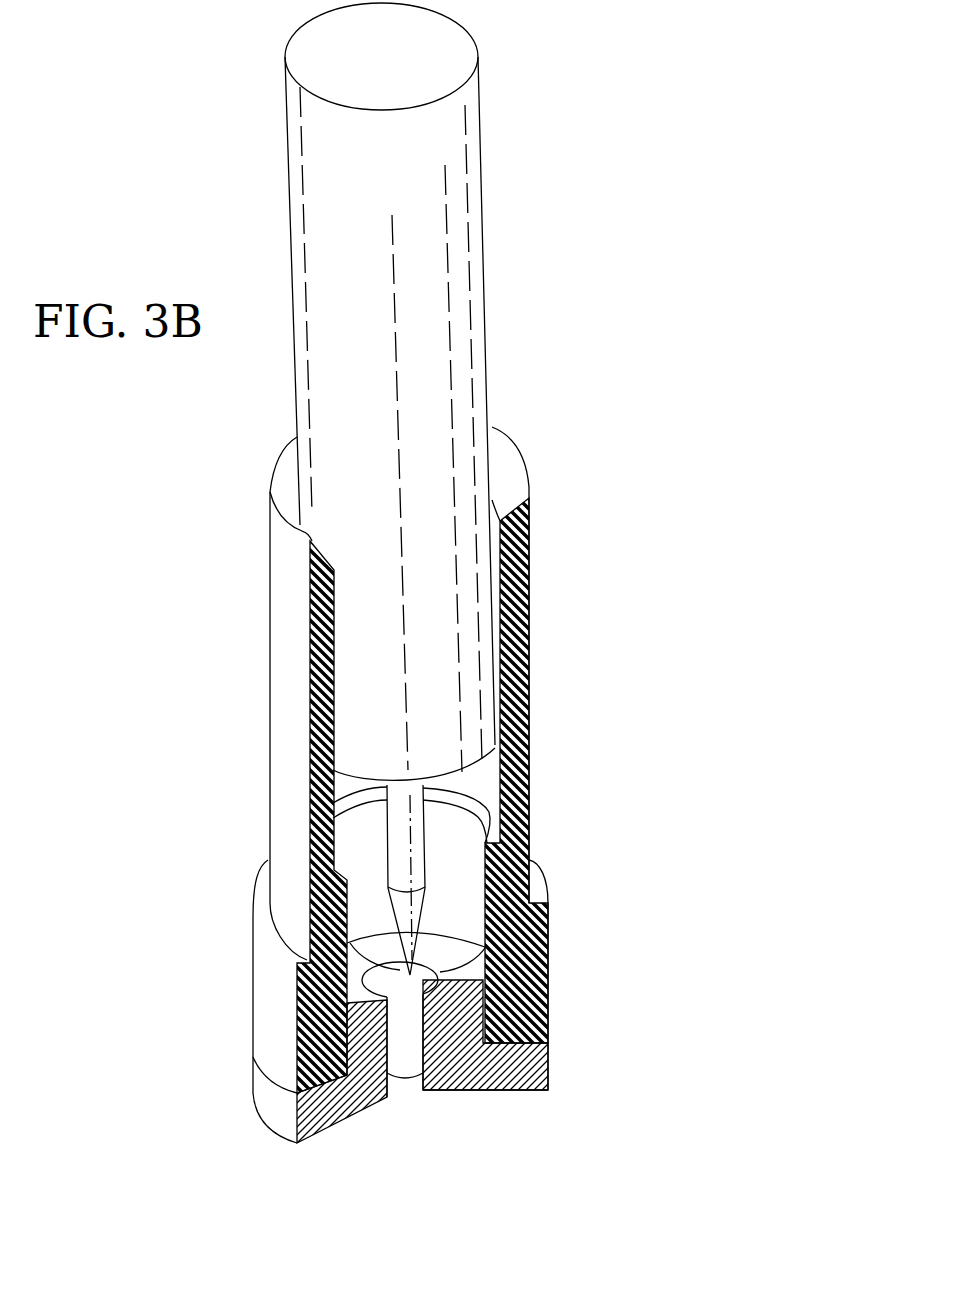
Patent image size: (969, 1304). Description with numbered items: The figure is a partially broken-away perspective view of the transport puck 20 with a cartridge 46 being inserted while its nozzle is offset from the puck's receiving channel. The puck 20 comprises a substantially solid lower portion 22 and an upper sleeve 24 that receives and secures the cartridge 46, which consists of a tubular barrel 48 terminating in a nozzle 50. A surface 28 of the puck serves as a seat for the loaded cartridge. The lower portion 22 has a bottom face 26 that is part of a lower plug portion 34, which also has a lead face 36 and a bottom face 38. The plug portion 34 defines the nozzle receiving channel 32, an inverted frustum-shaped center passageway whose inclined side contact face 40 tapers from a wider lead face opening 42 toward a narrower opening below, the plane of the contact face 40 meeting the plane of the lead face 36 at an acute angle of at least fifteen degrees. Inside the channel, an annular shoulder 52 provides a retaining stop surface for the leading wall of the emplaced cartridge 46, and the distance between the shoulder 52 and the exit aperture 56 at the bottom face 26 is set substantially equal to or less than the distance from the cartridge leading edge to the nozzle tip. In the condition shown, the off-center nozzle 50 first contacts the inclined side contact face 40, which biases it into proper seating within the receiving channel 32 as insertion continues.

The transport puck 20 is at (532, 577).
The lower portion 22 is at (553, 1066).
The upper sleeve 24 is at (532, 652).
The bottom face 26 is at (513, 1092).
The surface 28 is at (510, 473).
The nozzle receiving channel 32 is at (408, 1083).
The lower plug portion 34 is at (366, 940).
The lead face 36 is at (441, 950).
The bottom face 38 is at (397, 1026).
The inclined side contact face 40 is at (367, 976).
The lead face opening 42 is at (487, 950).
The cartridge 46 is at (482, 113).
The tubular barrel 48 is at (485, 225).
The nozzle 50 is at (397, 821).
The annular shoulder 52 is at (494, 830).
The exit aperture 56 is at (390, 1097).